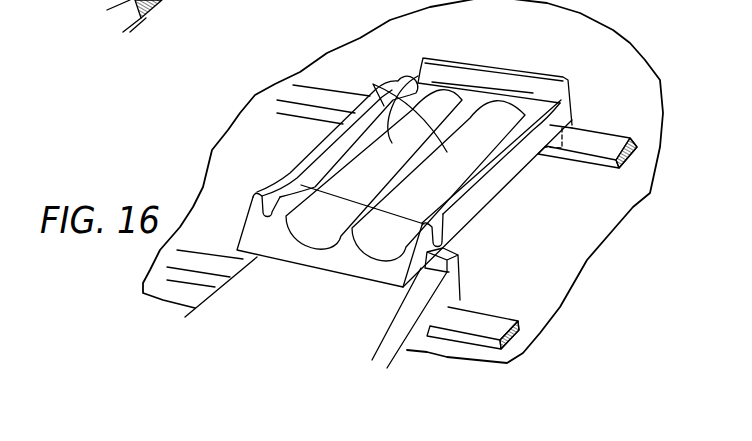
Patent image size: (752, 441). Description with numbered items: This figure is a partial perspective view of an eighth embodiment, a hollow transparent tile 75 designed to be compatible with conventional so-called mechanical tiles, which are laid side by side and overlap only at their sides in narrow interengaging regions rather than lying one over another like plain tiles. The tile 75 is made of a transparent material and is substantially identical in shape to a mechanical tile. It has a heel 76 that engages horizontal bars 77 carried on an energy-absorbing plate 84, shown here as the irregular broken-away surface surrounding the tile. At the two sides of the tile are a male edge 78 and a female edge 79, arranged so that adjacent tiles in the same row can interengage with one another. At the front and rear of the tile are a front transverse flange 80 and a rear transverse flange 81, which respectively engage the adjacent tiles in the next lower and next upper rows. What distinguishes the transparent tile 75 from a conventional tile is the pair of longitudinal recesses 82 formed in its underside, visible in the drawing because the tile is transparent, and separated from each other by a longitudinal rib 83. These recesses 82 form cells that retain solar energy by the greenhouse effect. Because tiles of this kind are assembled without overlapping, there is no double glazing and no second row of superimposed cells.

The hollow transparent tile 75 is at (475, 53).
The heel 76 is at (572, 126).
The horizontal bars 77 is at (603, 158).
The male edge 78 is at (487, 183).
The female edge 79 is at (290, 180).
The front transverse flange 80 is at (427, 264).
The rear transverse flange 81 is at (552, 76).
The longitudinal recesses 82 is at (373, 84).
The longitudinal rib 83 is at (459, 126).
The energy-absorbing plate 84 is at (586, 255).